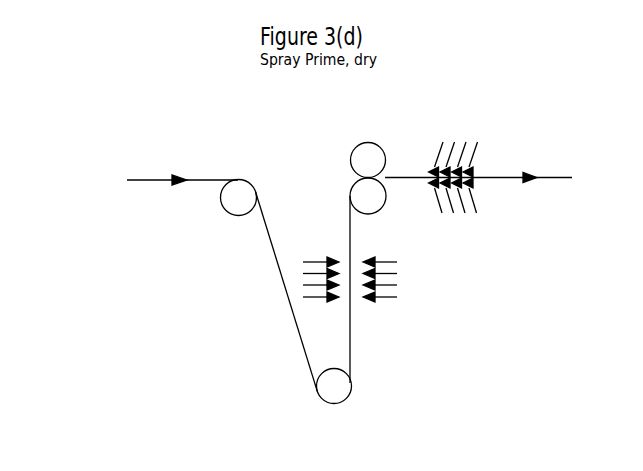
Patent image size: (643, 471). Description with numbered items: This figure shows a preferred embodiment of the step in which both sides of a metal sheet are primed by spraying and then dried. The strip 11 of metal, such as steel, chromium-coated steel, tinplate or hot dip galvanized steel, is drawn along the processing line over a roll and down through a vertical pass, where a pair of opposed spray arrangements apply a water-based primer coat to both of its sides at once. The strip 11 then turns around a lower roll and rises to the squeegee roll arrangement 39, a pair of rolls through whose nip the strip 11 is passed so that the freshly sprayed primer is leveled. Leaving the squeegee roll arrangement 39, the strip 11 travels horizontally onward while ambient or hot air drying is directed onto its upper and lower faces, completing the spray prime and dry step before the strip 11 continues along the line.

The strip 11 is at (167, 181).
The squeegee roll arrangement 39 is at (350, 162).